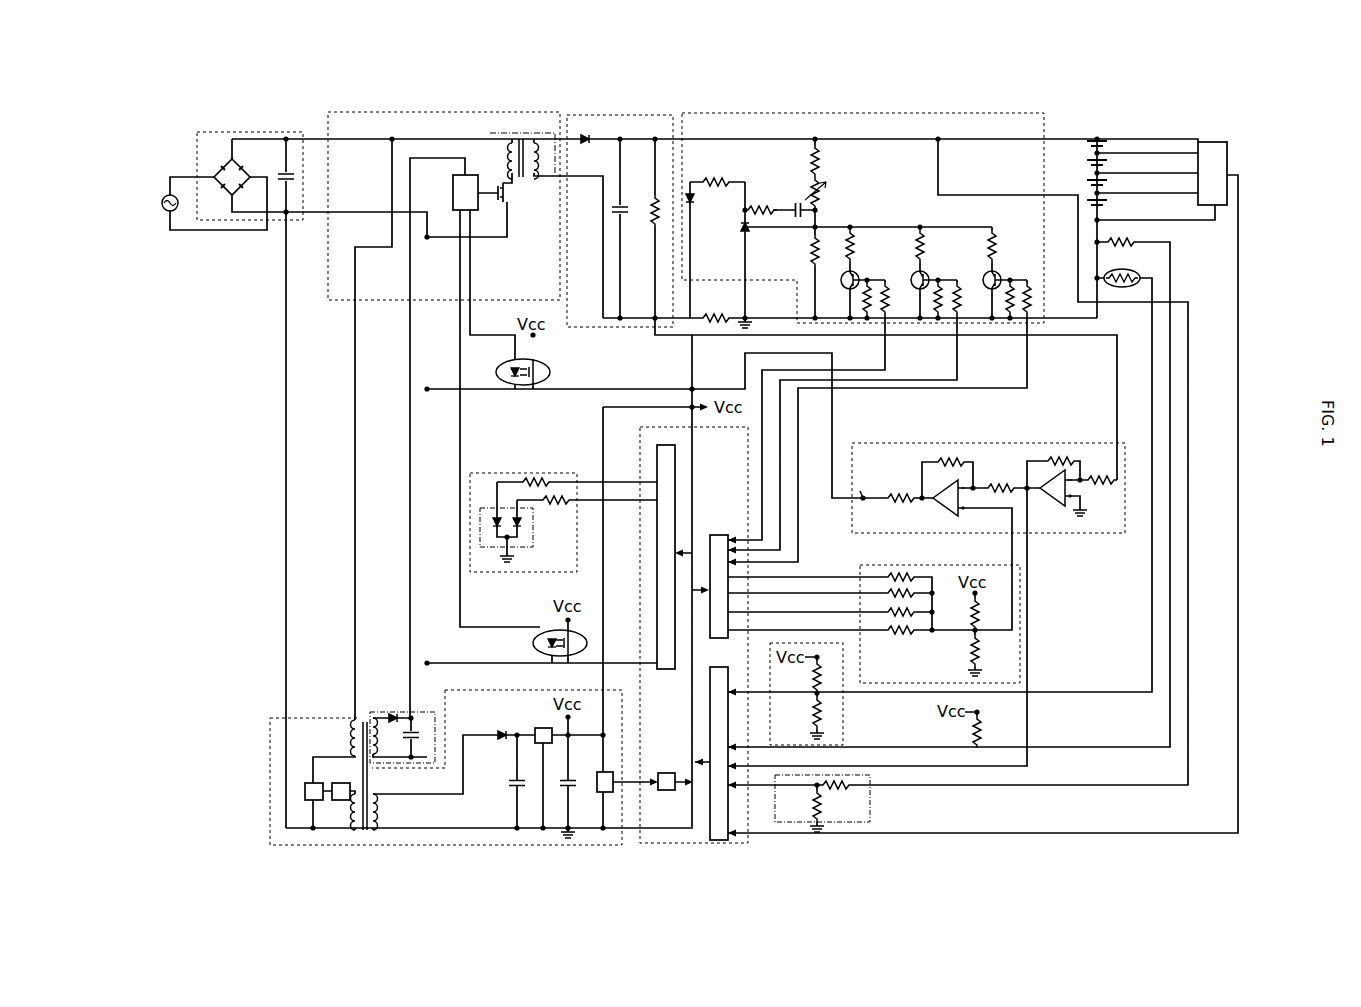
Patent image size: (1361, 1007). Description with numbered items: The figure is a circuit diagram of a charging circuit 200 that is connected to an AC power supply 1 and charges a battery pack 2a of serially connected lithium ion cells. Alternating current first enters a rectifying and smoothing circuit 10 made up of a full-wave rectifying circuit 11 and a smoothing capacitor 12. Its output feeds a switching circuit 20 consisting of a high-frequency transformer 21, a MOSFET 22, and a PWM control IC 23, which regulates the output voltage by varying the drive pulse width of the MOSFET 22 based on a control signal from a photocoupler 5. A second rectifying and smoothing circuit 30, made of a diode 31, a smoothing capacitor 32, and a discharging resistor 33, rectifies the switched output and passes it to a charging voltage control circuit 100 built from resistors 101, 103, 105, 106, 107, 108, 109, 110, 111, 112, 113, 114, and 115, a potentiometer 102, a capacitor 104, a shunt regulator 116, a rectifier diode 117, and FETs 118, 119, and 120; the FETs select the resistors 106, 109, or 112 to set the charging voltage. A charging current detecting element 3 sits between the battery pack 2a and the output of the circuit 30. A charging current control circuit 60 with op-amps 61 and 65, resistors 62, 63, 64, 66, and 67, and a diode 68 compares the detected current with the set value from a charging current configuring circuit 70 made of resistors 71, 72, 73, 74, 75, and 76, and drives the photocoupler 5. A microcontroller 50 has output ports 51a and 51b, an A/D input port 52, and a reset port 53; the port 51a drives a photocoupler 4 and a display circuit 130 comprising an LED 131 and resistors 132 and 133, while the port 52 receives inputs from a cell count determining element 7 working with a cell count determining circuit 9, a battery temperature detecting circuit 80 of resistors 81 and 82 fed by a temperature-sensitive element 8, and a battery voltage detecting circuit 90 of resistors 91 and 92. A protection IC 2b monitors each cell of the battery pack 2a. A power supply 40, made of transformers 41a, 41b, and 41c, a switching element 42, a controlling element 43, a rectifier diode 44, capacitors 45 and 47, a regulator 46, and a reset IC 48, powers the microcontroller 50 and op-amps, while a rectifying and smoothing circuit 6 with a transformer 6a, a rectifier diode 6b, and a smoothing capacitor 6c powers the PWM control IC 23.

The AC power supply 1 is at (178, 202).
The rectifying and smoothing circuit 10 is at (222, 132).
The full-wave rectifying circuit 11 is at (222, 168).
The smoothing capacitor 12 is at (280, 172).
The switching circuit 20 is at (342, 112).
The high-frequency transformer 21 is at (508, 138).
The MOSFET 22 is at (498, 203).
The PWM control IC 23 is at (453, 190).
The rectifying and smoothing circuit 30 is at (588, 114).
The diode 31 is at (586, 144).
The smoothing capacitor 32 is at (622, 205).
The discharging resistor 33 is at (655, 224).
The charging voltage control circuit 100 is at (726, 113).
The resistor 101 is at (818, 158).
The potentiometer 102 is at (824, 192).
The resistor 103 is at (762, 206).
The capacitor 104 is at (797, 203).
The resistor 105 is at (812, 243).
The resistor 106 is at (855, 237).
The resistor 107 is at (869, 285).
The resistor 108 is at (895, 272).
The resistor 109 is at (918, 238).
The resistor 110 is at (940, 290).
The resistor 111 is at (956, 320).
The resistor 112 is at (988, 240).
The resistor 113 is at (1014, 287).
The resistor 114 is at (1028, 320).
The resistor 115 is at (714, 180).
The shunt regulator 116 is at (738, 228).
The rectifier diode 117 is at (696, 198).
The FET 118 is at (841, 280).
The FET 119 is at (926, 273).
The FET 120 is at (997, 270).
The charging current detecting element 3 is at (716, 315).
The charging circuit 200 is at (994, 97).
The battery pack 2a is at (1087, 178).
The protection IC 2b is at (1220, 140).
The cell count determining element 7 is at (1132, 242).
The battery temperature detecting element 8 is at (1130, 273).
The photocoupler 5 is at (497, 368).
The photocoupler 4 is at (533, 643).
The display circuit 130 is at (485, 473).
The LED 131 is at (533, 542).
The resistor 132 is at (556, 505).
The resistor 133 is at (532, 478).
The microcontroller 50 is at (640, 447).
The output port 51a is at (666, 669).
The output port 51b is at (716, 535).
The A/D input port 52 is at (716, 667).
The reset port 53 is at (666, 773).
The charging current control circuit 60 is at (882, 443).
The op-amp 61 is at (1053, 505).
The resistor 62 is at (1100, 476).
The resistor 63 is at (1055, 458).
The resistor 64 is at (1000, 484).
The op-amp 65 is at (942, 510).
The resistor 66 is at (948, 458).
The resistor 67 is at (897, 493).
The diode 68 is at (864, 492).
The charging current configuring circuit 70 is at (985, 565).
The resistor 71 is at (970, 613).
The resistor 72 is at (970, 650).
The resistor 73 is at (893, 573).
The resistor 74 is at (907, 589).
The resistor 75 is at (888, 617).
The resistor 76 is at (900, 634).
The battery temperature detecting circuit 80 is at (843, 720).
The resistor 81 is at (810, 680).
The resistor 82 is at (810, 712).
The cell count determining circuit 9 is at (982, 731).
The battery voltage detecting circuit 90 is at (870, 805).
The resistor 91 is at (838, 790).
The resistor 92 is at (812, 804).
The power supply 40 is at (270, 740).
The transformer 41a is at (350, 740).
The transformer 41b is at (352, 812).
The transformer 41c is at (380, 812).
The switching element 42 is at (308, 783).
The controlling element 43 is at (341, 783).
The rectifying and smoothing circuit 6 is at (379, 712).
The transformer 6a is at (380, 750).
The rectifier diode 6b is at (393, 712).
The smoothing capacitor 6c is at (413, 745).
The rectifier diode 44 is at (502, 727).
The capacitor 45 is at (512, 780).
The regulator 46 is at (543, 728).
The capacitor 47 is at (566, 780).
The reset IC 48 is at (600, 772).